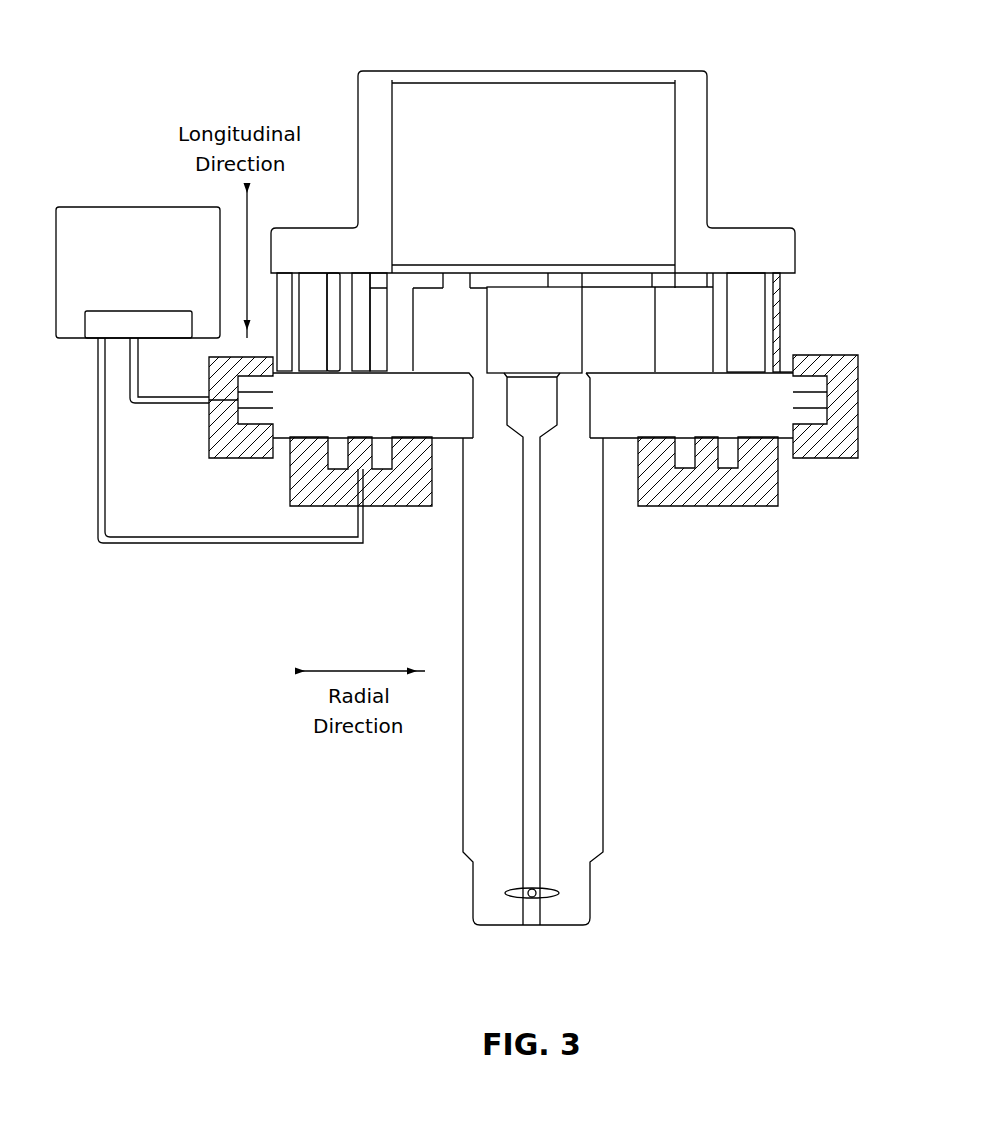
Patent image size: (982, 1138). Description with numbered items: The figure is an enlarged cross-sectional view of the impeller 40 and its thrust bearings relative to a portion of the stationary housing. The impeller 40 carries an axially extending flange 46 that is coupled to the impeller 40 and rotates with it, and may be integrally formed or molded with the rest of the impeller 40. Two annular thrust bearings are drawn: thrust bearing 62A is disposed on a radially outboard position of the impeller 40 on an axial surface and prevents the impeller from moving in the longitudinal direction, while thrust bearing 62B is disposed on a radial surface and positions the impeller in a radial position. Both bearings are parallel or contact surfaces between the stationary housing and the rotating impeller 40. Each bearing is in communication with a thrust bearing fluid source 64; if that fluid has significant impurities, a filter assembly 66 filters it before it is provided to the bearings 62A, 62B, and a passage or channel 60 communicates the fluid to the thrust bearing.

The impeller 40 is at (766, 592).
The axially extending flange 46 is at (376, 133).
The passage or channel 60 is at (100, 402).
The thrust bearing 62A is at (210, 466).
The thrust bearing 62B is at (373, 512).
The thrust bearing fluid source 64 is at (113, 212).
The filter assembly 66 is at (93, 327).